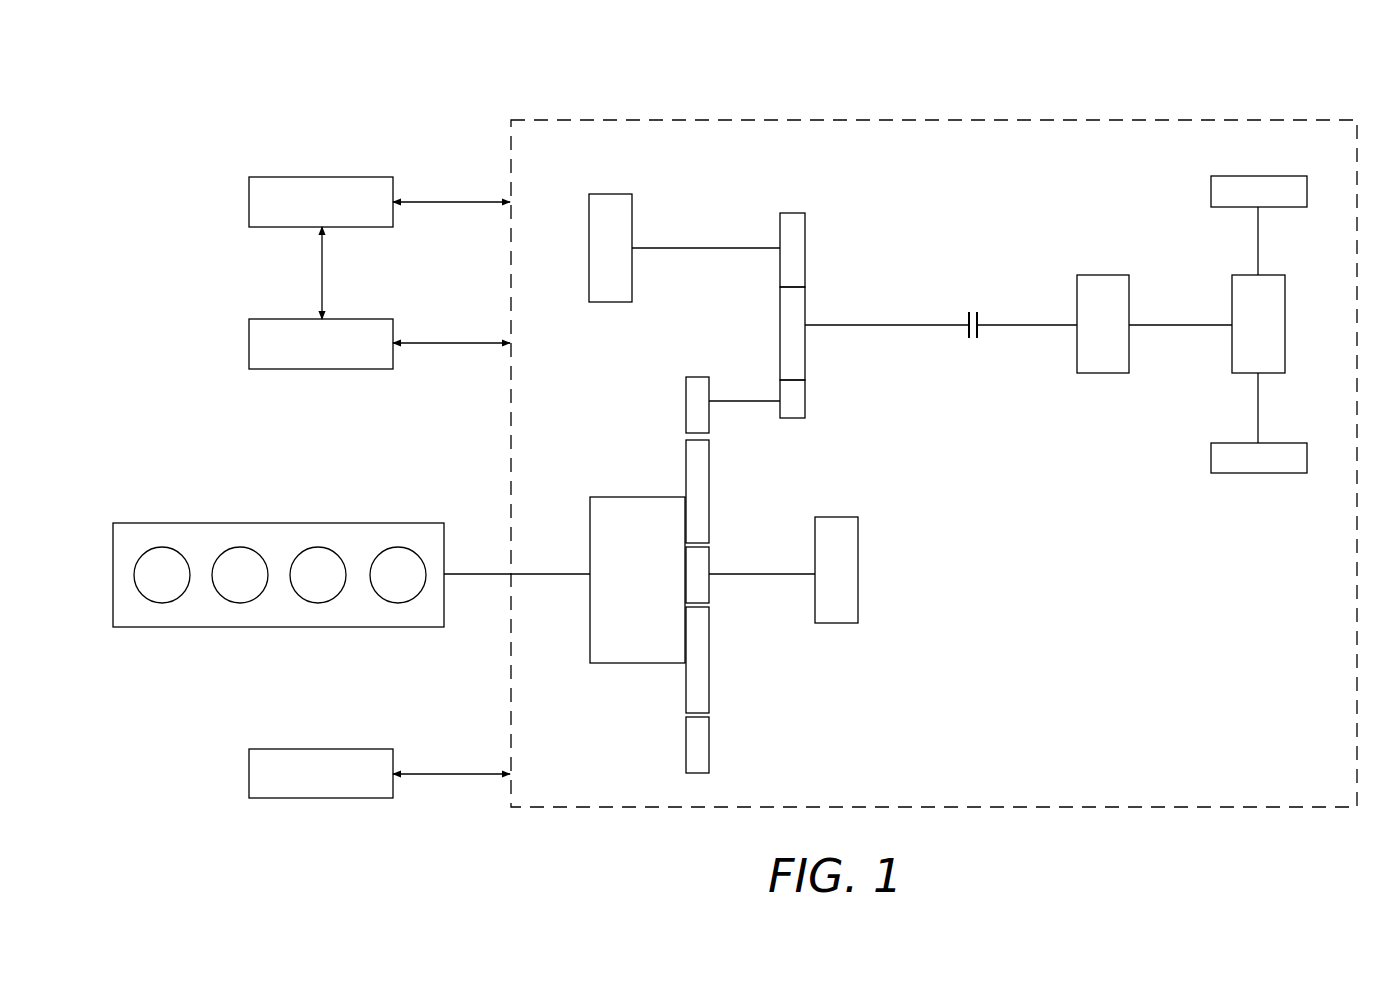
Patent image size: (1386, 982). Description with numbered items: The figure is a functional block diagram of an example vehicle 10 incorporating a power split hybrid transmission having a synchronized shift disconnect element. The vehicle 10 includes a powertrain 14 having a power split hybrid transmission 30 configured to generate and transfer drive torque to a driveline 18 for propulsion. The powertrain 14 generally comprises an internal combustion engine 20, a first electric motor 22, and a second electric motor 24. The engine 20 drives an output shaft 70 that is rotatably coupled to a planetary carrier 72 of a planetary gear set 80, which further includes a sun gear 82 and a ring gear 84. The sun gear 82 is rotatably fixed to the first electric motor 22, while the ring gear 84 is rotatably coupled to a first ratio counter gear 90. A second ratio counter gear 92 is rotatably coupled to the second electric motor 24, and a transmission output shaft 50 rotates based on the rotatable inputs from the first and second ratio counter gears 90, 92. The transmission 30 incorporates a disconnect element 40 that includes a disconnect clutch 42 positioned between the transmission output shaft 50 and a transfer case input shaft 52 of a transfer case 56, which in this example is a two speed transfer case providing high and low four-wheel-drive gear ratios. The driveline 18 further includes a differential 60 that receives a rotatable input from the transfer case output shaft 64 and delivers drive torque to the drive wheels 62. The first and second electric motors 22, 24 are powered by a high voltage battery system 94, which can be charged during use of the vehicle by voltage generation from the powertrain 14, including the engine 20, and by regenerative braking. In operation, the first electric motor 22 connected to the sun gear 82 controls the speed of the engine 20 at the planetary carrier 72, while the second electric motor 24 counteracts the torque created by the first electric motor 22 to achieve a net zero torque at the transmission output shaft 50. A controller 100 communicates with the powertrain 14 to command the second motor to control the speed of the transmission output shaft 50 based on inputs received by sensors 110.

The vehicle 10 is at (186, 160).
The powertrain 14 is at (1023, 120).
The driveline 18 is at (1165, 432).
The internal combustion engine 20 is at (278, 627).
The first electric motor 22 is at (858, 557).
The second electric motor 24 is at (632, 215).
The power split hybrid transmission 30 is at (762, 158).
The disconnect element 40 is at (1003, 372).
The disconnect clutch 42 is at (968, 345).
The transmission output shaft 50 is at (890, 325).
The transfer case input shaft 52 is at (1018, 325).
The transfer case 56 is at (1103, 275).
The differential 60 is at (1232, 353).
The drive wheels 62 is at (1260, 176).
The transfer case output shaft 64 is at (1173, 325).
The output shaft 70 is at (560, 574).
The planetary carrier 72 is at (709, 487).
The planetary gear set 80 is at (642, 440).
The sun gear 82 is at (709, 563).
The ring gear 84 is at (686, 393).
The first ratio counter gear 90 is at (805, 401).
The second ratio counter gear 92 is at (805, 237).
The high voltage battery system 94 is at (345, 798).
The controller 100 is at (327, 177).
The sensors 110 is at (345, 369).